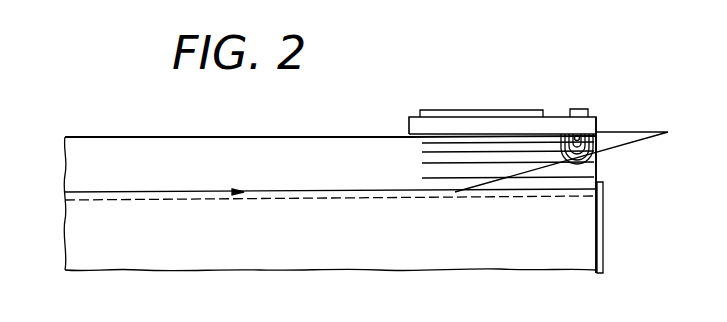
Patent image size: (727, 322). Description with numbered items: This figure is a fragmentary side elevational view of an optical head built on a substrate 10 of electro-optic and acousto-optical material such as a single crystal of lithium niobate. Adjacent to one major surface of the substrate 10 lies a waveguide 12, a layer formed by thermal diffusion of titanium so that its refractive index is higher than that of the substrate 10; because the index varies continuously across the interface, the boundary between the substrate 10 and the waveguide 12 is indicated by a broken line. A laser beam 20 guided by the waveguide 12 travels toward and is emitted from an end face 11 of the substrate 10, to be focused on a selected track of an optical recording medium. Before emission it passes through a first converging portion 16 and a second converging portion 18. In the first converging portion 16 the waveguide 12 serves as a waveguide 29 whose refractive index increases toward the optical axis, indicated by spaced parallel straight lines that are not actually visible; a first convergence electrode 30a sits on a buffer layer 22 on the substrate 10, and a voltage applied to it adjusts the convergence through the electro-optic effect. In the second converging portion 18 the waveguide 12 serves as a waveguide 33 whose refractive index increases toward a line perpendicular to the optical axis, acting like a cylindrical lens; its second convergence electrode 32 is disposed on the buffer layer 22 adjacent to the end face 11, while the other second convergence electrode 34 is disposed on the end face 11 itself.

The substrate 10 is at (106, 255).
The end face 11 is at (600, 170).
The waveguide 12 is at (113, 146).
The first converging portion 16 is at (498, 200).
The second converging portion 18 is at (586, 197).
The laser beam 20 is at (641, 138).
The buffer layer 22 is at (459, 125).
The waveguide 29 is at (455, 158).
The first convergence electrode 30a is at (506, 110).
The second convergence electrode 32 is at (583, 108).
The waveguide 33 is at (590, 141).
The second convergence electrode 34 is at (603, 256).